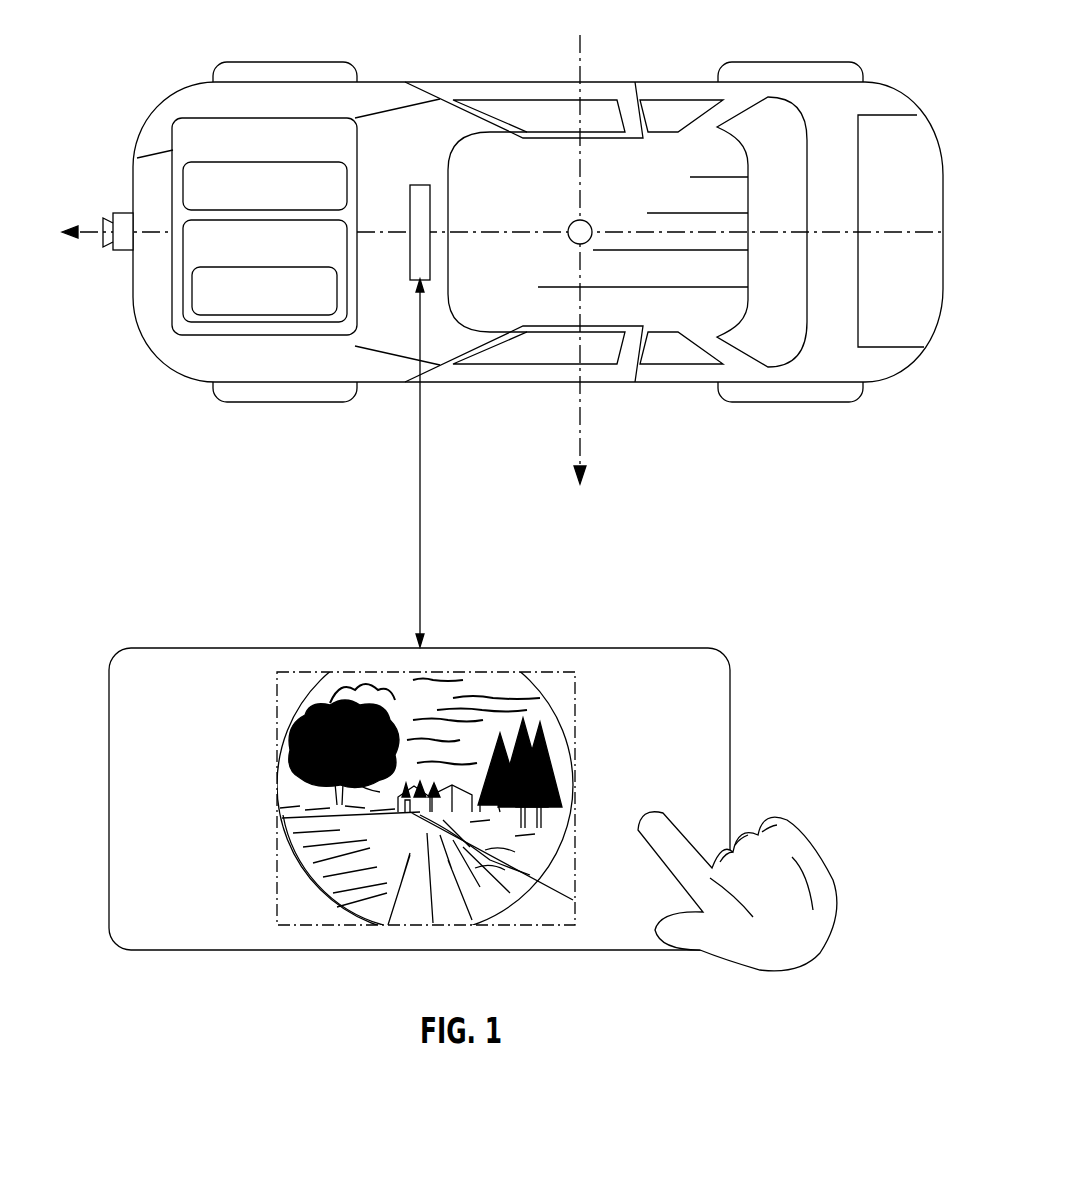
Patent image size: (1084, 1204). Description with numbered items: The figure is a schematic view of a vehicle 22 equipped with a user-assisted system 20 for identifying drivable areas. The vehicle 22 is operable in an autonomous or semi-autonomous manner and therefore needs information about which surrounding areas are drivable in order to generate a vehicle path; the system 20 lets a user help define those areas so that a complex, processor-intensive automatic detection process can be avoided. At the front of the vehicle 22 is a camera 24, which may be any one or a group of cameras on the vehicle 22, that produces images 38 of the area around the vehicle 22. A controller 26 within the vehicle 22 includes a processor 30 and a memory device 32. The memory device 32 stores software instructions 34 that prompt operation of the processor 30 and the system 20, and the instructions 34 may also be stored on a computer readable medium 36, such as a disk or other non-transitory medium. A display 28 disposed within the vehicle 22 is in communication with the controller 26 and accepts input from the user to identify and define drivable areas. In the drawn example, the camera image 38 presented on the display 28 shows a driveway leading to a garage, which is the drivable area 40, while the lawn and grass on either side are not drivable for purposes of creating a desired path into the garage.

The user-assisted system 20 is at (423, 146).
The vehicle 22 is at (222, 363).
The camera 24 is at (110, 213).
The controller 26 is at (207, 118).
The display 28 is at (432, 203).
The processor 30 is at (182, 190).
The memory device 32 is at (180, 228).
The software instructions 34 is at (190, 292).
The computer readable medium 36 is at (190, 280).
The image 38 is at (578, 727).
The drivable area 40 is at (348, 850).